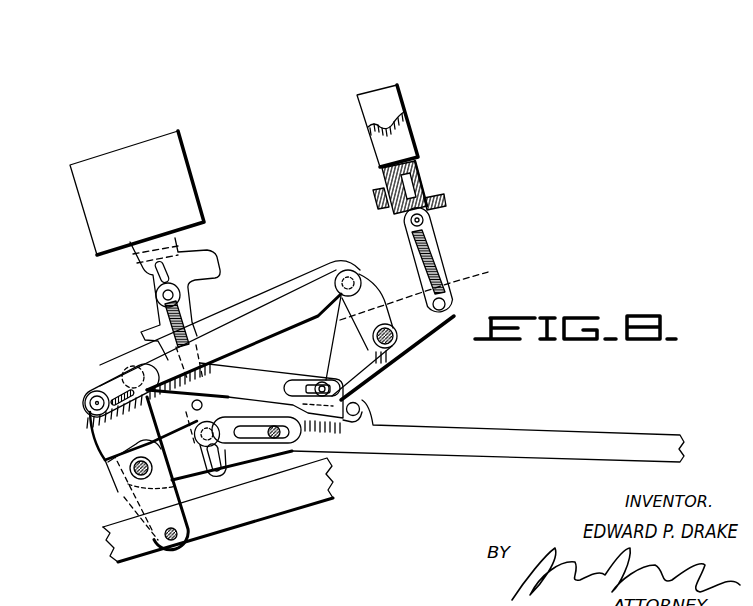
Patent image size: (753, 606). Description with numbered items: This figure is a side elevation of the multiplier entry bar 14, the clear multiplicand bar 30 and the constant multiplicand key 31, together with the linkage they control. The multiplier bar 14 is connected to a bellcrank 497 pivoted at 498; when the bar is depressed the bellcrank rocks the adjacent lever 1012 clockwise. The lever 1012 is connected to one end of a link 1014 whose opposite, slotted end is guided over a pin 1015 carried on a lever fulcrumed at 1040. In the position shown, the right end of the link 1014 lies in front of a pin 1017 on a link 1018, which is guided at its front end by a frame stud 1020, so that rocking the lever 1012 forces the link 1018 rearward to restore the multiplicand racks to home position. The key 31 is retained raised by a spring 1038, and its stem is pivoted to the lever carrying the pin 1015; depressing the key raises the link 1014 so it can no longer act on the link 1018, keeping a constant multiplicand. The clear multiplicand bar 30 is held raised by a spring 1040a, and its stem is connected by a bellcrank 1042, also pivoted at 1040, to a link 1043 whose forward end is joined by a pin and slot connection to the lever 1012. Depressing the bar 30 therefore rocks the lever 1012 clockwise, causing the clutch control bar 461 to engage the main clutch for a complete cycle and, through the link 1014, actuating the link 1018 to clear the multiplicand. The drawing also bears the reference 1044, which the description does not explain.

The multiplier bar 14 is at (122, 160).
The clear multiplicand bar 30 is at (396, 92).
The constant first factor key 31 is at (415, 176).
The spring 1040a is at (437, 237).
The spring 1038 is at (434, 264).
The link 1043 is at (285, 290).
The bellcrank 1042 is at (365, 292).
The pivot 1040 is at (399, 340).
The pin 1015 is at (322, 382).
The link 1014 is at (289, 359).
The pivot 1044 is at (96, 392).
The pin 1017 is at (361, 412).
The link 1018 is at (425, 428).
The lever 1012 is at (104, 438).
The frame stud 1020 is at (274, 438).
The pivot 498 is at (132, 471).
The bellcrank 497 is at (118, 500).
The clutch control bar 461 is at (272, 518).